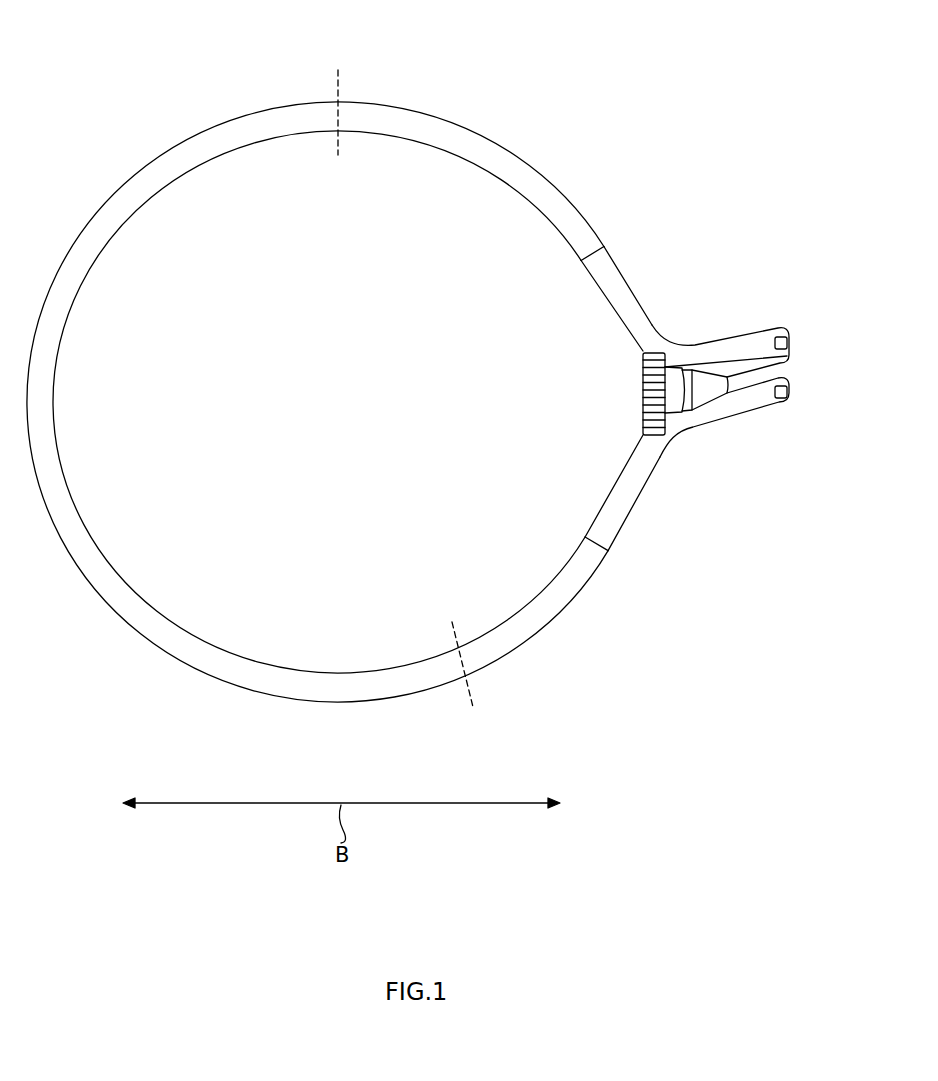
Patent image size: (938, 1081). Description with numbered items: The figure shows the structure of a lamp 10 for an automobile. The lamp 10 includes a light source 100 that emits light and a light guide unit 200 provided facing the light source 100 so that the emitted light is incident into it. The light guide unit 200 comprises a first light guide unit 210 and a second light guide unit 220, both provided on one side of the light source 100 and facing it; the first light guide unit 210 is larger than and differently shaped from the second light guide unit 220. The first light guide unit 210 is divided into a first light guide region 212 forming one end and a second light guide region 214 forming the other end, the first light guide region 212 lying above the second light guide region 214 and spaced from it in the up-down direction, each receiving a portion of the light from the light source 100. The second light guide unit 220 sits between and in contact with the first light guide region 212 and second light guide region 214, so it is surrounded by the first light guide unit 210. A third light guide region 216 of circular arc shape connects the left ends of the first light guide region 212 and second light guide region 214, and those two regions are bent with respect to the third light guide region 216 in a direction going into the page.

The lamp 10 is at (115, 46).
The light guide unit 200 is at (692, 670).
The first light guide unit 210 is at (552, 138).
The first light guide region 212 is at (614, 285).
The second light guide region 214 is at (625, 498).
The third light guide region 216 is at (47, 398).
The second light guide unit 220 is at (641, 392).
The light source 100 is at (788, 344).